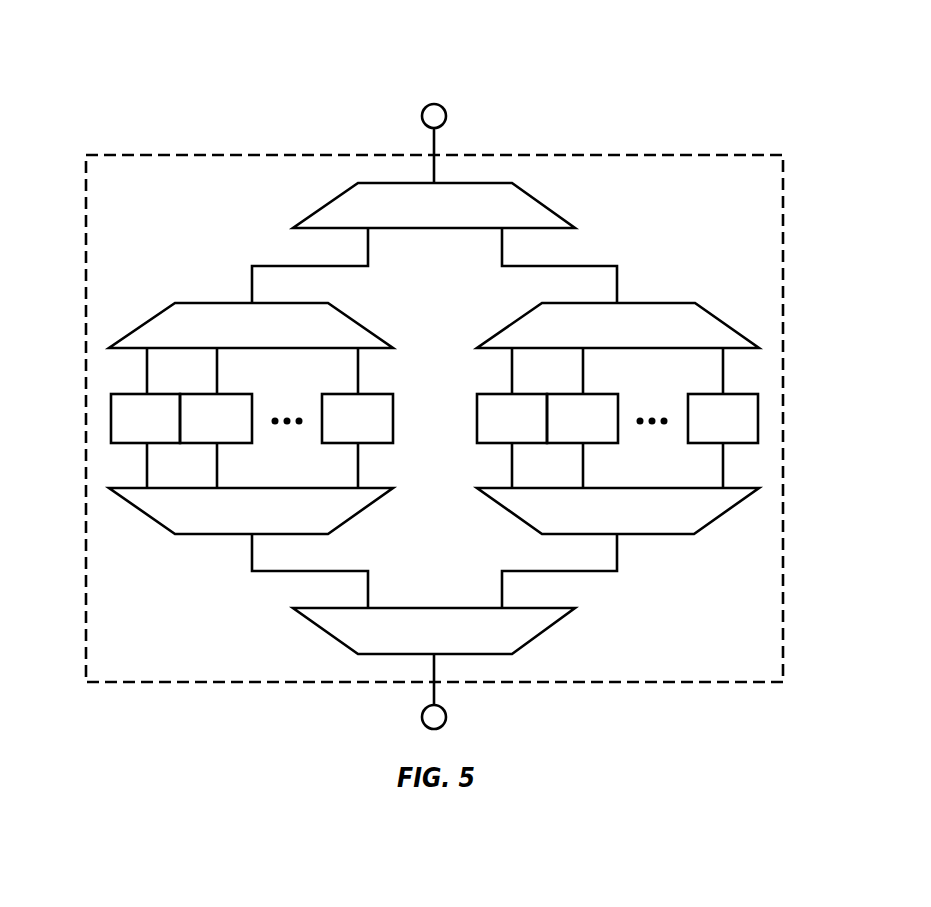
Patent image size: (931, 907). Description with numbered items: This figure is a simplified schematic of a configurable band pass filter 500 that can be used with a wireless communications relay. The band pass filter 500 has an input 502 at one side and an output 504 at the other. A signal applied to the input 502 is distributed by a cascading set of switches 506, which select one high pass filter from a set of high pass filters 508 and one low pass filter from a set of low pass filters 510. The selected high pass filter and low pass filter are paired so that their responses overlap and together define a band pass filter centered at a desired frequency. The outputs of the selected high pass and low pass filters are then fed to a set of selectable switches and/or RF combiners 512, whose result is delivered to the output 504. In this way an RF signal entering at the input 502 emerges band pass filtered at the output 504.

The band pass filter 500 is at (75, 62).
The input 502 is at (446, 109).
The output 504 is at (446, 711).
The cascading set of switches 506 is at (793, 155).
The set of high pass filters 508 is at (797, 403).
The set of low pass filters 510 is at (76, 412).
The set of selectable switches and/or RF combiners 512 is at (793, 488).